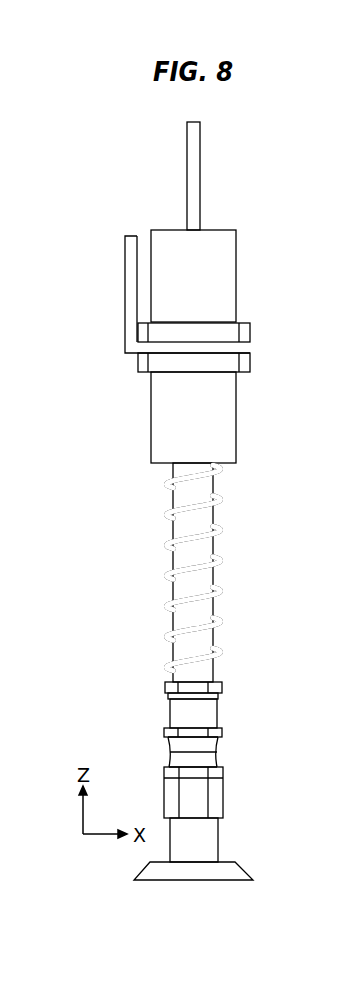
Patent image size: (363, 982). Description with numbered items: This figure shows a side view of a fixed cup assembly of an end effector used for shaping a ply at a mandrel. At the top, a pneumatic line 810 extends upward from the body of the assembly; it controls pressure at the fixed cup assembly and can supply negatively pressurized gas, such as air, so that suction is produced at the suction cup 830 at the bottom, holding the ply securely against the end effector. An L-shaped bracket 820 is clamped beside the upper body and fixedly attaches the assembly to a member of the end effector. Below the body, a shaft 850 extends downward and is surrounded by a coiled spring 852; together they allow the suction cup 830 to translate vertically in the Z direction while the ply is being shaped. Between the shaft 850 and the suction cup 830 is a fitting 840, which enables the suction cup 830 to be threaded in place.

The pneumatic line 810 is at (200, 164).
The bracket 820 is at (125, 283).
The suction cup 830 is at (245, 870).
The fitting 840 is at (218, 744).
The shaft 850 is at (208, 605).
The spring 852 is at (218, 525).